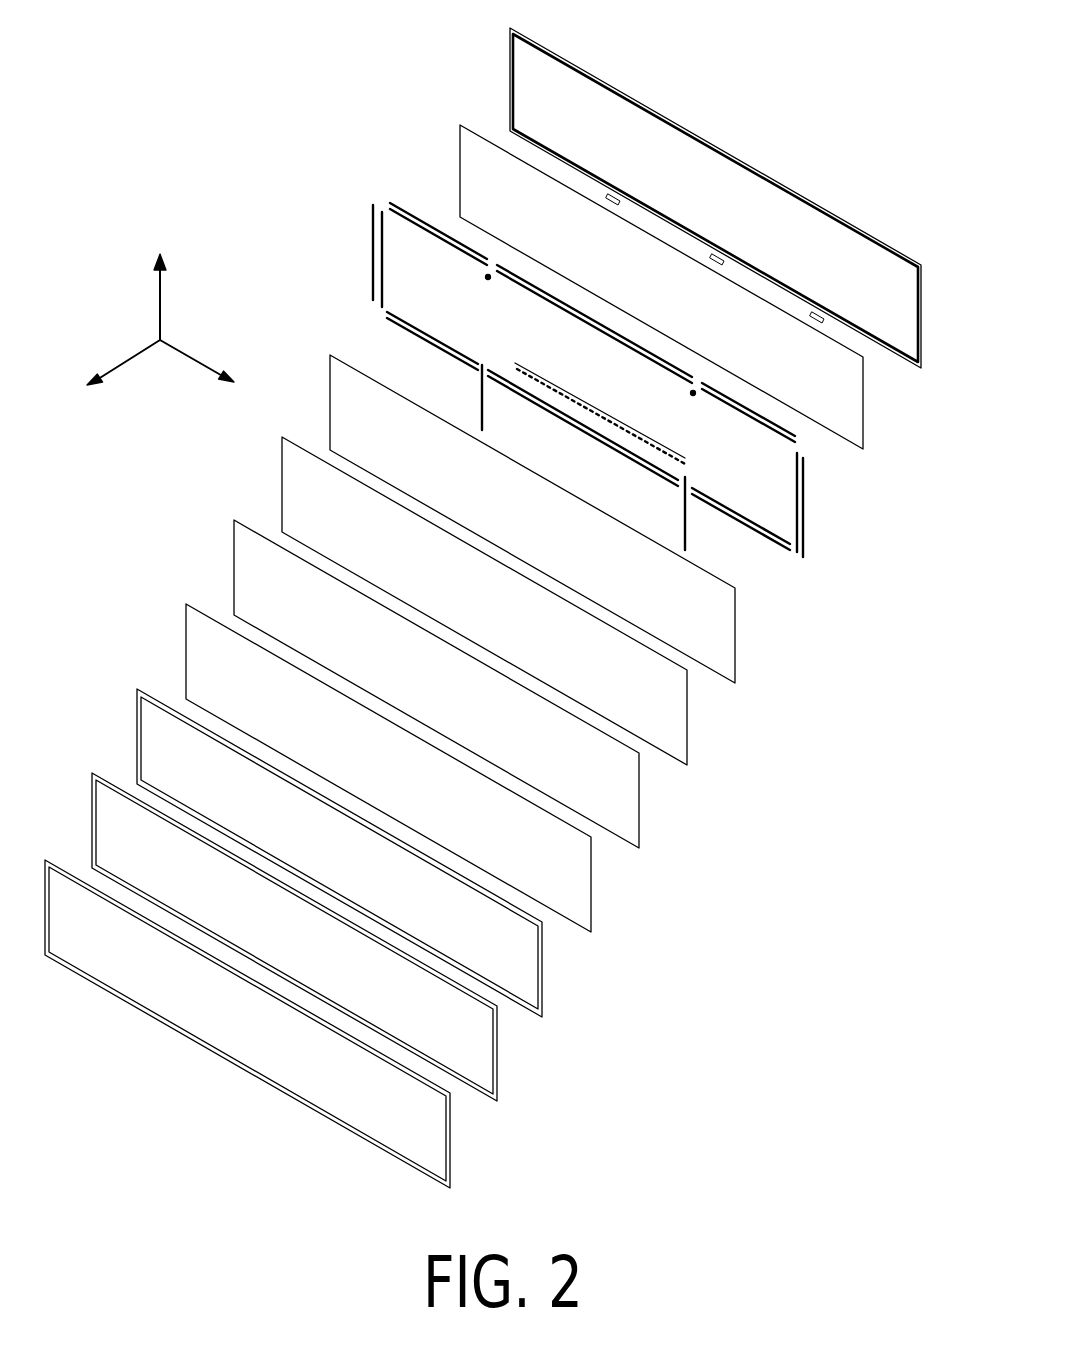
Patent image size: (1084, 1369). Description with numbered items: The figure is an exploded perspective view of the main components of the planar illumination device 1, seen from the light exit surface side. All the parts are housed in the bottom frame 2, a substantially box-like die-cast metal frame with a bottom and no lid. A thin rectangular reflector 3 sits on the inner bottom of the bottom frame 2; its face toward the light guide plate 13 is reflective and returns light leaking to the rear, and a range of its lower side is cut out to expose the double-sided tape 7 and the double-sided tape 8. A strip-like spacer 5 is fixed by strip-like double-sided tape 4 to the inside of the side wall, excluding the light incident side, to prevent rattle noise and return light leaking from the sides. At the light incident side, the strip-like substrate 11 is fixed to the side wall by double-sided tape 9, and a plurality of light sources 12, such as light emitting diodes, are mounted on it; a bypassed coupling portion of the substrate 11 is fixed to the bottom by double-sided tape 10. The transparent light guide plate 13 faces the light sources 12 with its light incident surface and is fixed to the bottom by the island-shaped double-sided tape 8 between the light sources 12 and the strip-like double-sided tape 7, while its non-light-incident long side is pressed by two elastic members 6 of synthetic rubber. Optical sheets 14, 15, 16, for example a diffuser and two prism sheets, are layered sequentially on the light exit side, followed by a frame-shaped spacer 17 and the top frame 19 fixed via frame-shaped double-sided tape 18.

The planar illumination device 1 is at (205, 555).
The bottom frame 2 is at (921, 302).
The reflector 3 is at (863, 396).
The double-sided tape 4 is at (717, 393).
The spacer 5 is at (405, 212).
The elastic member 6 is at (486, 280).
The double-sided tape 7 is at (631, 430).
The double-sided tape 8 is at (557, 393).
The double-sided tape 9 is at (428, 350).
The double-sided tape 10 is at (485, 356).
The substrate 11 is at (747, 520).
The light source 12 is at (713, 493).
The light guide plate 13 is at (735, 637).
The optical sheet 14 is at (687, 722).
The optical sheet 15 is at (639, 812).
The optical sheet 16 is at (591, 890).
The spacer 17 is at (542, 965).
The double-sided tape 18 is at (497, 1057).
The top frame 19 is at (450, 1150).